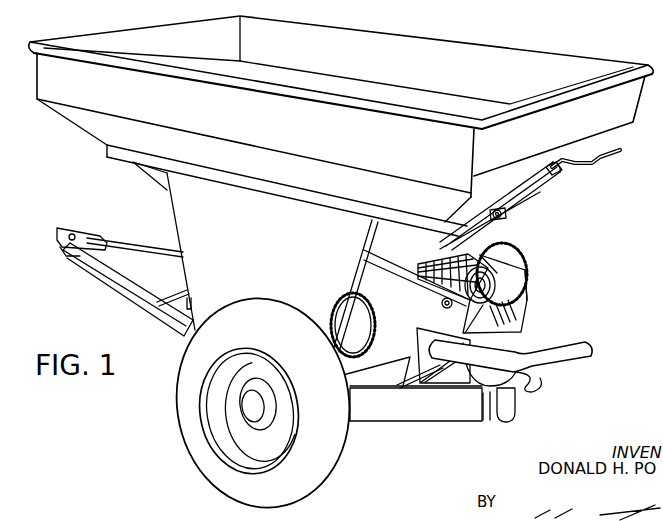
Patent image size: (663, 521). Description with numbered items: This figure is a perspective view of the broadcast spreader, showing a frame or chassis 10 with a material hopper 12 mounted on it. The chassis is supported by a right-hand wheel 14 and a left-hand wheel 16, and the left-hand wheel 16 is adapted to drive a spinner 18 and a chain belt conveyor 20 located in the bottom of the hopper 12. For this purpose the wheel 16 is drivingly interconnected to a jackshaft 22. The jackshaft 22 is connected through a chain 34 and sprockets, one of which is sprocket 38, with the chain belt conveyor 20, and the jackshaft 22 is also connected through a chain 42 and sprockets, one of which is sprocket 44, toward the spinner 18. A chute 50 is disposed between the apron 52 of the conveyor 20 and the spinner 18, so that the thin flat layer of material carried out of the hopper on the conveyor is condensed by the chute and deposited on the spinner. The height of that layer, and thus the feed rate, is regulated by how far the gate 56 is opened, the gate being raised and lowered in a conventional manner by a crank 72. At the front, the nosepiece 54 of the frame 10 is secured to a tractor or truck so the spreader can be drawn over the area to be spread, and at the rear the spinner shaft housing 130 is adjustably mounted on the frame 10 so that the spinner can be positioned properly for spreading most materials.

The frame or chassis 10 is at (418, 407).
The material hopper 12 is at (548, 62).
The right-hand wheel 14 is at (480, 240).
The left-hand wheel 16 is at (303, 492).
The spinner 18 is at (574, 341).
The chain belt conveyor 20 is at (443, 278).
The jackshaft 22 is at (343, 323).
The chain 34 is at (507, 247).
The sprocket 38 is at (515, 285).
The chain 42 is at (368, 306).
The sprocket 44 is at (360, 338).
The chute 50 is at (534, 319).
The apron 52 is at (507, 272).
The nosepiece 54 is at (85, 237).
The gate 56 is at (483, 218).
The crank 72 is at (577, 170).
The spinner shaft housing 130 is at (510, 410).